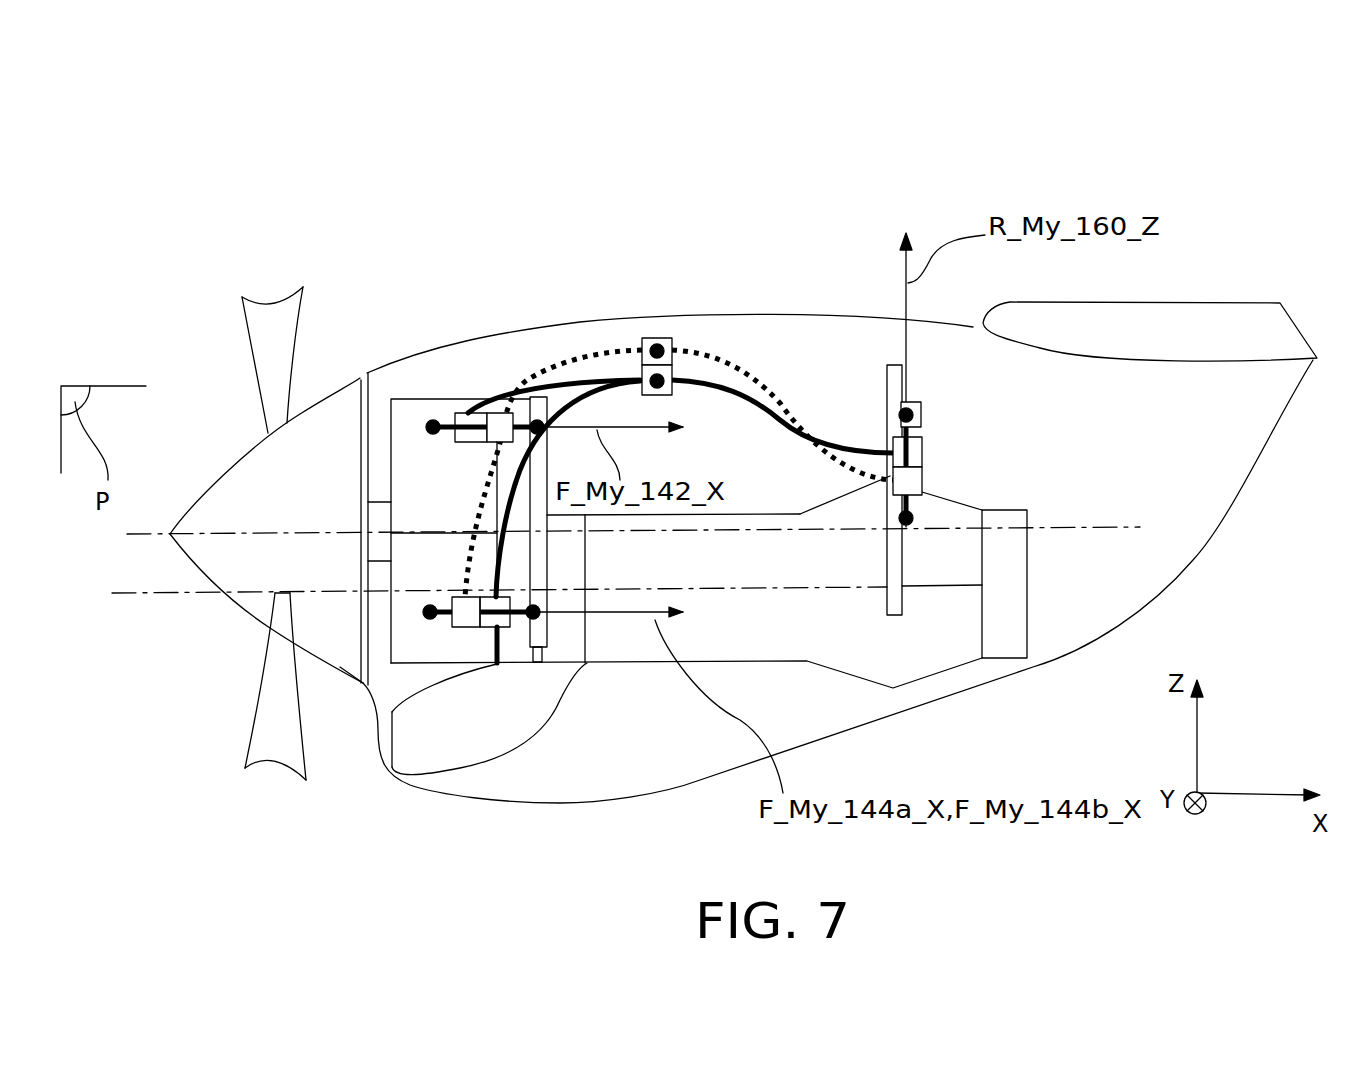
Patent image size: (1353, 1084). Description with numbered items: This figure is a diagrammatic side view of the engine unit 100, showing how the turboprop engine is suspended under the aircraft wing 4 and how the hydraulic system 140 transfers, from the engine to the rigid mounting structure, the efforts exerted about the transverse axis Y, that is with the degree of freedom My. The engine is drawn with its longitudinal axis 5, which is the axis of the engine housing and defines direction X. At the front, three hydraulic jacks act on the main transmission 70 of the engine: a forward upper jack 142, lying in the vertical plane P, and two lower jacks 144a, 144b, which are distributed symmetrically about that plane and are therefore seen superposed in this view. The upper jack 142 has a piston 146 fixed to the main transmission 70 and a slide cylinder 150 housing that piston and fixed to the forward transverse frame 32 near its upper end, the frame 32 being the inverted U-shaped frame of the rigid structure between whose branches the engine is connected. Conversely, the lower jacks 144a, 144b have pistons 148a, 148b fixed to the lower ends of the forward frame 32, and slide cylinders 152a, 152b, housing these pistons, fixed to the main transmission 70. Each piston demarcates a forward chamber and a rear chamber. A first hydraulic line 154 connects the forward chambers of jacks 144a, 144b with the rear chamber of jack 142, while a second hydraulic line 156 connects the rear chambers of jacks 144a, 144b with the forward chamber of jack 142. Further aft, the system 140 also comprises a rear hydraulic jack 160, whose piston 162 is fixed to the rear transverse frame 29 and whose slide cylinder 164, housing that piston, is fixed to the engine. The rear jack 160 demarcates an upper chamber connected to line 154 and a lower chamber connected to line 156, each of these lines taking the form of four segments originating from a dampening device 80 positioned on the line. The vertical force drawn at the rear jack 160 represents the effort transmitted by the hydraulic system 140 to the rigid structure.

The engine unit 100 is at (632, 182).
The hydraulic system 140 is at (670, 293).
The dampening device 80 is at (660, 381).
The hydraulic line 154 is at (560, 377).
The hydraulic line 156 is at (548, 372).
The forward upper hydraulic jack 142 is at (460, 393).
The piston 146 is at (455, 413).
The slide cylinder 150 is at (485, 443).
The main transmission 70 is at (407, 470).
The slide cylinder 152a is at (372, 583).
The slide cylinder 152b is at (452, 600).
The hydraulic jack 144a is at (415, 735).
The hydraulic jack 144b is at (466, 628).
The piston 148a is at (568, 653).
The piston 148b is at (520, 627).
The second transverse frame 32 is at (543, 577).
The rear transverse frame 29 is at (903, 597).
The piston 162 is at (920, 413).
The rear hydraulic jack 160 is at (937, 462).
The slide cylinder 164 is at (922, 490).
The wing 4 is at (1232, 303).
The longitudinal axis 5 is at (143, 593).